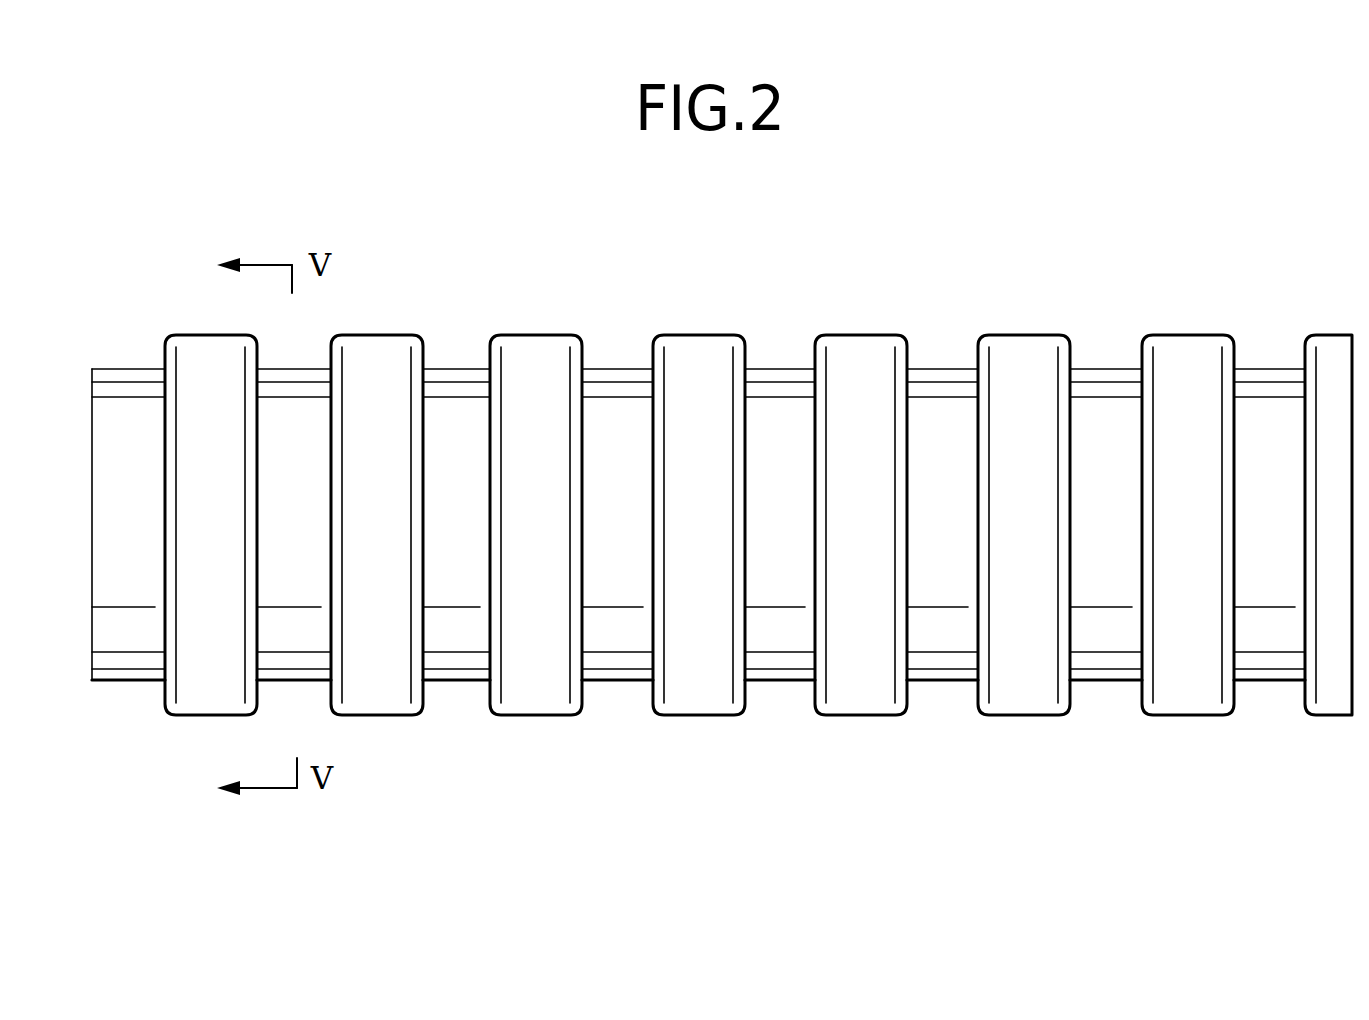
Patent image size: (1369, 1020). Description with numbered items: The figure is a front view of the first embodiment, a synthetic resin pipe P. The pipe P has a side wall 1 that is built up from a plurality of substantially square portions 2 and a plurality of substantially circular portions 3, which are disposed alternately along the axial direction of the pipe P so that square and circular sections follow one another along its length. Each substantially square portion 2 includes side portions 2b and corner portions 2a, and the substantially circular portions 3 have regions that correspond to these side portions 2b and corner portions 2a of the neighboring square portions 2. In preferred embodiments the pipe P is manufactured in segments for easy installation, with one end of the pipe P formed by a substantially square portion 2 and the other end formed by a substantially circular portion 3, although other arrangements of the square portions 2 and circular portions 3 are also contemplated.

The side wall 1 is at (1023, 340).
The substantially square portion 2 is at (698, 528).
The corner portion 2a is at (542, 705).
The side portion 2b is at (862, 543).
The substantially circular portion 3 is at (452, 383).
The synthetic resin pipe P is at (1210, 289).